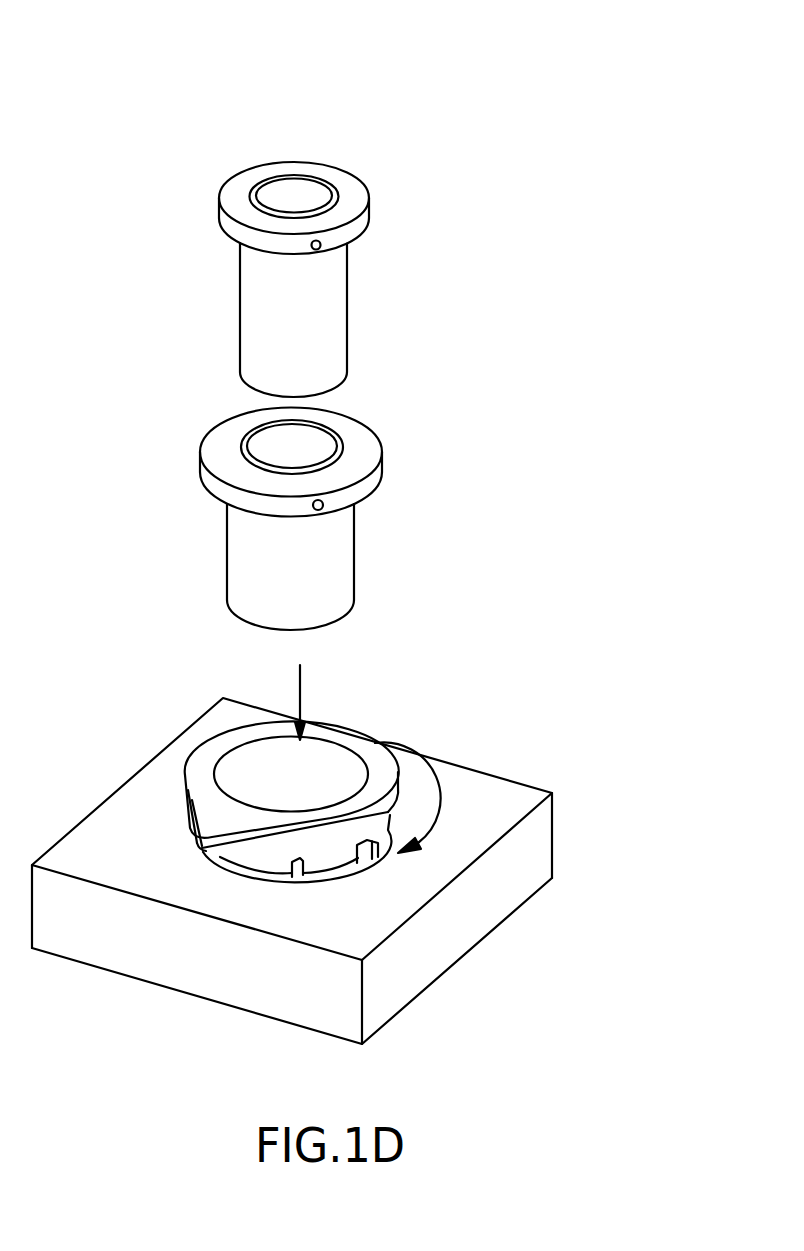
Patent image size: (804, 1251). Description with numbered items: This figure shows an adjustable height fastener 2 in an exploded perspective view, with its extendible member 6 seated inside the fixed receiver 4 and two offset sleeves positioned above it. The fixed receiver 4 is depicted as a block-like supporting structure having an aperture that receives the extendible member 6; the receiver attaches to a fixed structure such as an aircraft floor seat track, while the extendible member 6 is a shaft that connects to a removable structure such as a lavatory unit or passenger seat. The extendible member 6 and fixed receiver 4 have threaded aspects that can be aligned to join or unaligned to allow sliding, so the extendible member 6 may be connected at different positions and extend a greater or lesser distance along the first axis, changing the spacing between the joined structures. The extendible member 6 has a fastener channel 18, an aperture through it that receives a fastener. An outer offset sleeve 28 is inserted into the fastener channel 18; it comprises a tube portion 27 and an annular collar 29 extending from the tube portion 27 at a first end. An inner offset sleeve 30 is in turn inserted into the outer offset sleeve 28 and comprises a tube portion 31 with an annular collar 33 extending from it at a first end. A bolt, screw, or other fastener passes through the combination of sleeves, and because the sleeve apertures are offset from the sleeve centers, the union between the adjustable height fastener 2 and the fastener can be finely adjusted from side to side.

The adjustable height fastener 2 is at (381, 71).
The fixed receiver 4 is at (523, 802).
The extendible member 6 is at (372, 752).
The fastener channel 18 is at (265, 765).
The tube portion 27 is at (347, 570).
The outer offset sleeve 28 is at (373, 452).
The annular collar 29 is at (233, 452).
The inner offset sleeve 30 is at (350, 187).
The tube portion 31 is at (339, 290).
The annular collar 33 is at (235, 186).